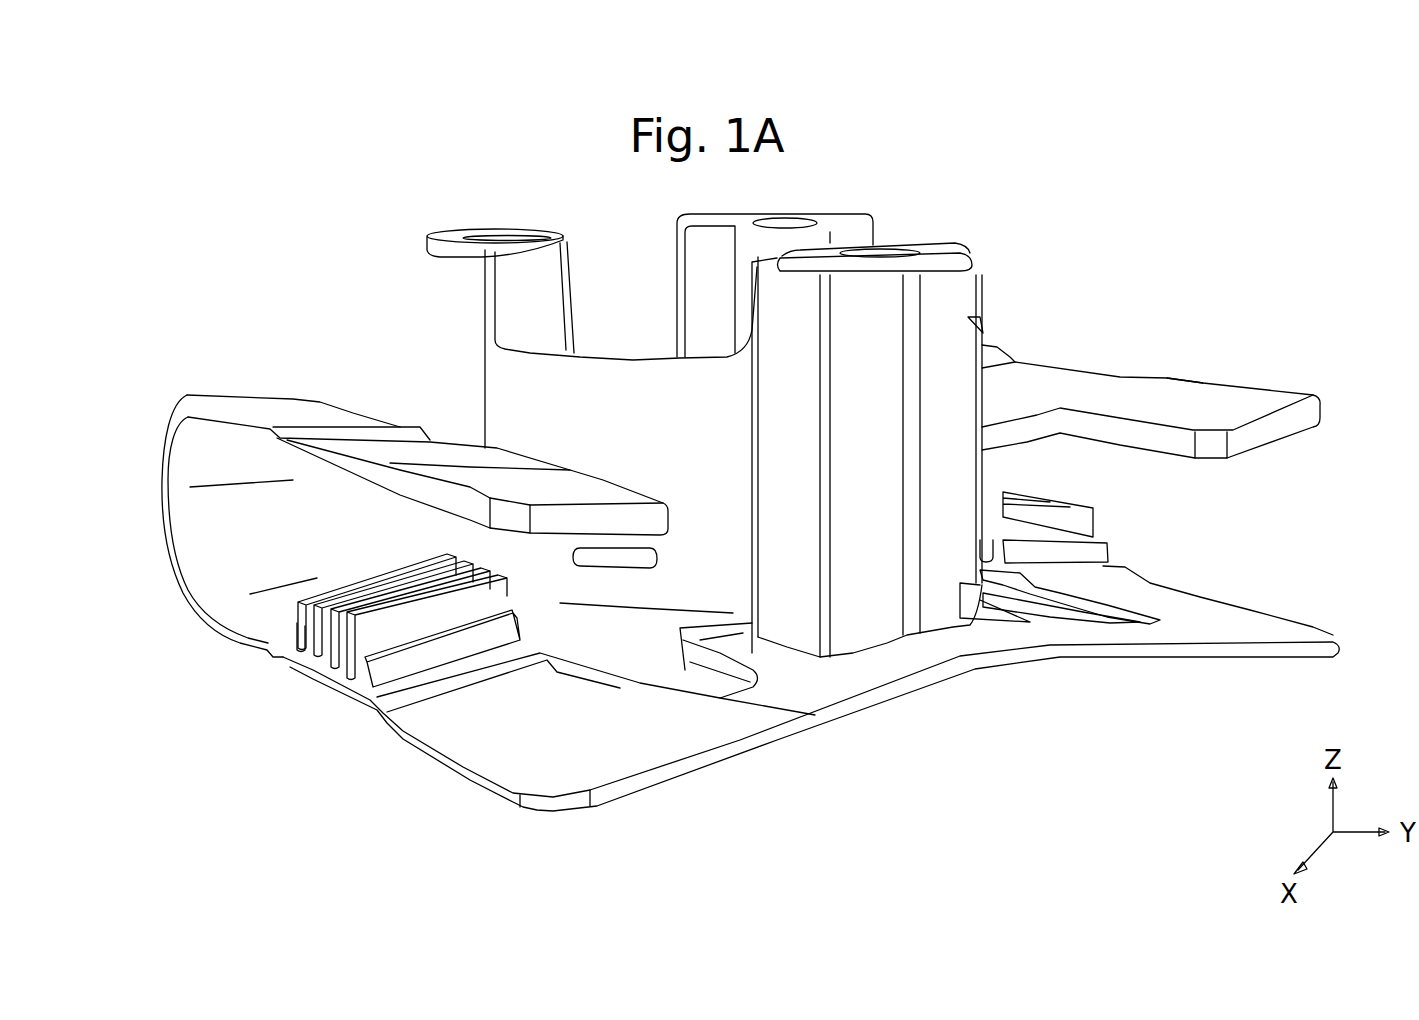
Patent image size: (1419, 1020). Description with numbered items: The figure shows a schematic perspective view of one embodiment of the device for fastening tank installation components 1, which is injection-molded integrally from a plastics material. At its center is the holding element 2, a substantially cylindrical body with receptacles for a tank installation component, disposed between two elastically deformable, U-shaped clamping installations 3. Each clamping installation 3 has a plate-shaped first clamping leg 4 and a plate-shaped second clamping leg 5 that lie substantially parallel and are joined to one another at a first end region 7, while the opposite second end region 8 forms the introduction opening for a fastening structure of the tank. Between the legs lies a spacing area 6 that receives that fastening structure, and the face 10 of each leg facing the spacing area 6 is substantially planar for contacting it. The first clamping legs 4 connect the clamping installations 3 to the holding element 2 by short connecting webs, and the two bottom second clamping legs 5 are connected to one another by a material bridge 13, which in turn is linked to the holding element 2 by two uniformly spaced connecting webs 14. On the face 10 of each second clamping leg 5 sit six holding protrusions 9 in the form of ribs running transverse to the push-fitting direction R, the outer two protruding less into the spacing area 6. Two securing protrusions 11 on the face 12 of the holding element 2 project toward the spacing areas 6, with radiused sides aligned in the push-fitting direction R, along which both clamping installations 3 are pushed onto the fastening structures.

The device for fastening tank installation components 1 is at (219, 124).
The holding element 2 is at (947, 305).
The clamping installation 3 is at (210, 383).
The first clamping leg 4 is at (313, 423).
The second clamping leg 5 is at (252, 617).
The spacing area 6 is at (377, 538).
The first end region of the clamping installation 7 is at (162, 515).
The second end region of the clamping installation 8 is at (667, 772).
The holding protrusion 9 is at (337, 620).
The face of a clamping leg that faces the spacing area 10 is at (553, 770).
The securing protrusion 11 is at (590, 550).
The face of the holding element that faces the spacing area 12 is at (527, 627).
The material bridge 13 is at (893, 667).
The connecting web 14 is at (757, 600).
The push-fitting direction R is at (548, 613).